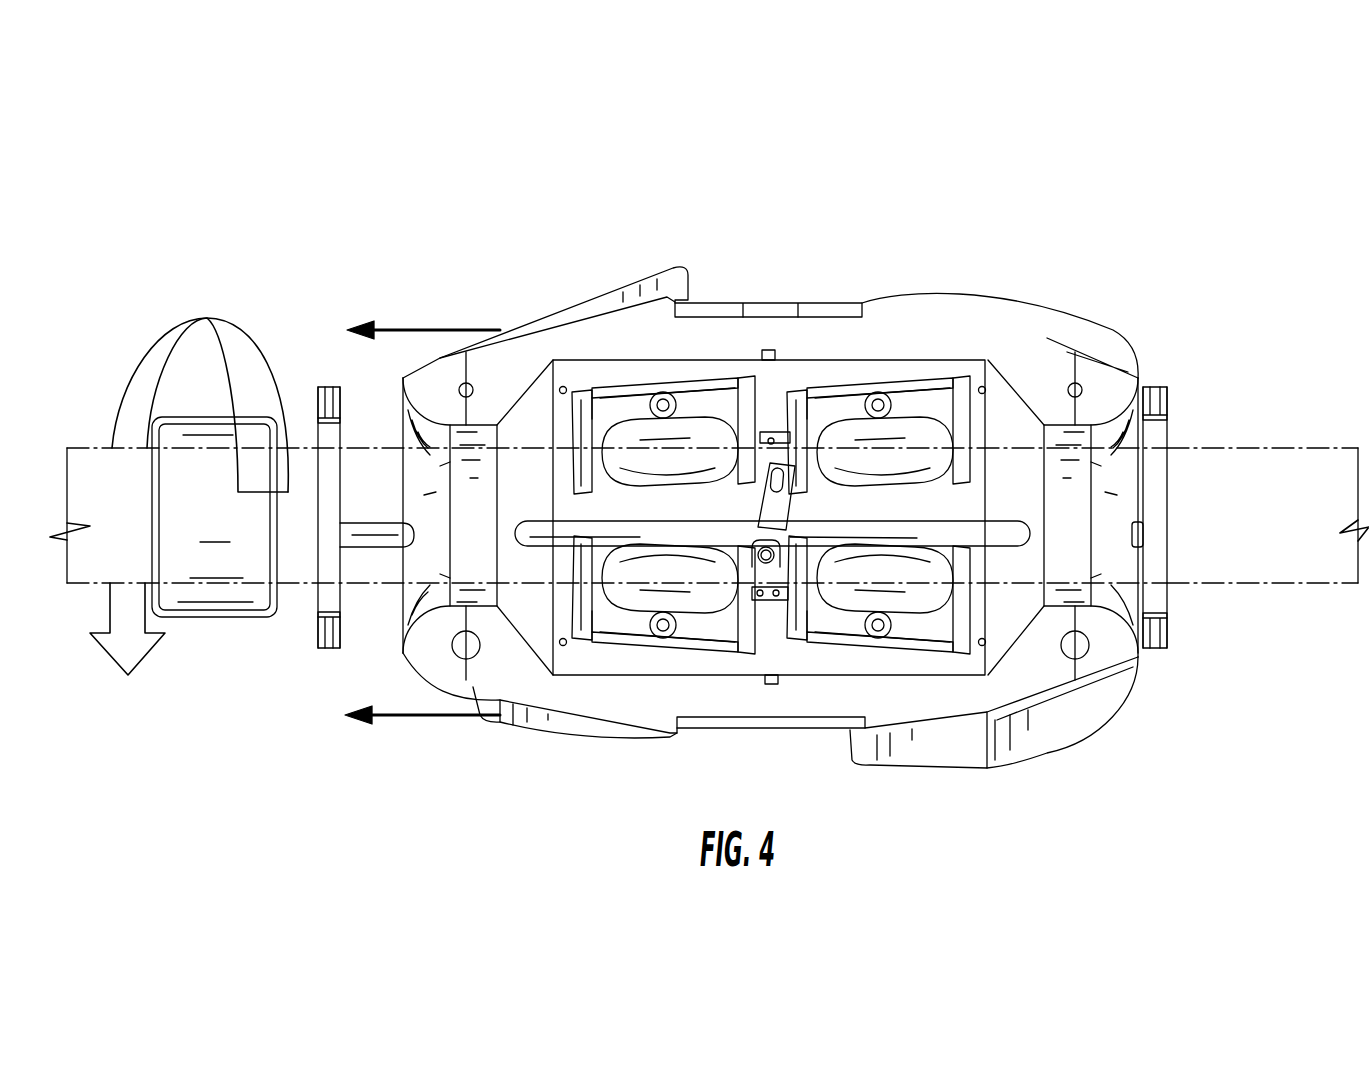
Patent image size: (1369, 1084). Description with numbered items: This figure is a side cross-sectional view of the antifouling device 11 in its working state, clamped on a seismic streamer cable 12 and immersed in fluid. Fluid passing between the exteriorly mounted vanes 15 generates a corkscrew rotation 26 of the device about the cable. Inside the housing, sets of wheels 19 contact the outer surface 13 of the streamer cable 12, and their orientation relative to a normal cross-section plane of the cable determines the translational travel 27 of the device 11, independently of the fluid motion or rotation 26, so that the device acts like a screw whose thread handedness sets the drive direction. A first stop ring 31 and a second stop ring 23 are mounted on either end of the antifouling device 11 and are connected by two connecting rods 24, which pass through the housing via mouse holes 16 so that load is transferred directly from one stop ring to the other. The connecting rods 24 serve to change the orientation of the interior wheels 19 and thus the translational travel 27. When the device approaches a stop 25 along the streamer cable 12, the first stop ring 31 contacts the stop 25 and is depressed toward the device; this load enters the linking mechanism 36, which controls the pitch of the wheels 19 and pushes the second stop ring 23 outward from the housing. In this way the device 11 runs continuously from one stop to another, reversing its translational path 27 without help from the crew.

The antifouling device 11 is at (781, 479).
The streamer cable 12 is at (1247, 416).
The outer surface 13 is at (1188, 447).
The vanes 15 is at (637, 278).
The mouse holes 16 is at (408, 523).
The wheels 19 is at (680, 433).
The second stop ring 23 is at (1158, 525).
The connecting rods 24 is at (585, 532).
The stop 25 is at (212, 592).
The corkscrew rotation 26 is at (250, 355).
The translational travel 27 is at (396, 328).
The first stop ring 31 is at (328, 572).
The linking mechanism 36 is at (752, 513).